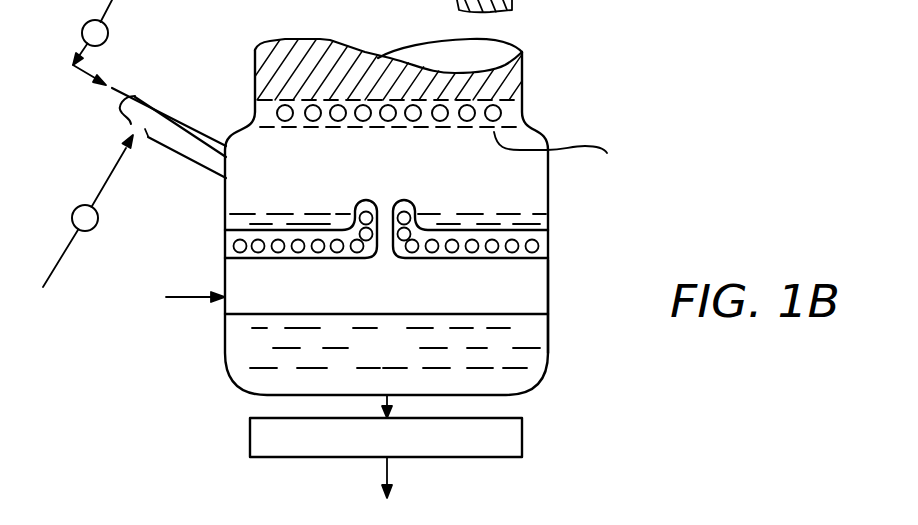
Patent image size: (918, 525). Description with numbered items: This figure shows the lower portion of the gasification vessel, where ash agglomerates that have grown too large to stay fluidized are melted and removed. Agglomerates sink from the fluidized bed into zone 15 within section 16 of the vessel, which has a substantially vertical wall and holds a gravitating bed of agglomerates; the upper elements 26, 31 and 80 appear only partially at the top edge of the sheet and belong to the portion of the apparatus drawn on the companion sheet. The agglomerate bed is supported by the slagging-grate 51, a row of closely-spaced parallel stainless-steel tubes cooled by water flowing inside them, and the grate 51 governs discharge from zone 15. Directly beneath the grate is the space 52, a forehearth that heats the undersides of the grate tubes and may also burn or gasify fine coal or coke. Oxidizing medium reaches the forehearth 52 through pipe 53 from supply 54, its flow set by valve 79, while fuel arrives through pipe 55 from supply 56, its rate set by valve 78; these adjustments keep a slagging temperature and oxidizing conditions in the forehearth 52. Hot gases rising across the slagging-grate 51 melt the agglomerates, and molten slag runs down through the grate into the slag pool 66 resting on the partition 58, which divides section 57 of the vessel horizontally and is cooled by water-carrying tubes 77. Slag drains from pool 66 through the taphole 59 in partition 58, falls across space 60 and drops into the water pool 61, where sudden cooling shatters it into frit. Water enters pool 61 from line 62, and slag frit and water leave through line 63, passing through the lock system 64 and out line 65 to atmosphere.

The zone 15 is at (350, 81).
The section 16 is at (253, 88).
The conduit 26 is at (578, 3).
The conduit 31 is at (695, 6).
The slagging-grate 51 is at (428, 129).
The space 52 is at (393, 180).
The pipe 53 is at (192, 158).
The supply 54 is at (113, 170).
The pipe 55 is at (124, 92).
The supply 56 is at (92, 70).
The section 57 is at (548, 298).
The partition 58 is at (470, 236).
The taphole 59 is at (381, 249).
The space 60 is at (472, 300).
The water pool 61 is at (401, 359).
The line 62 is at (173, 299).
The line 63 is at (390, 400).
The lock system 64 is at (250, 436).
The line 65 is at (383, 472).
The slag pool 66 is at (285, 214).
The tubes 77 is at (323, 250).
The valve 78 is at (109, 29).
The valve 79 is at (99, 226).
The conduit 80 is at (764, 6).